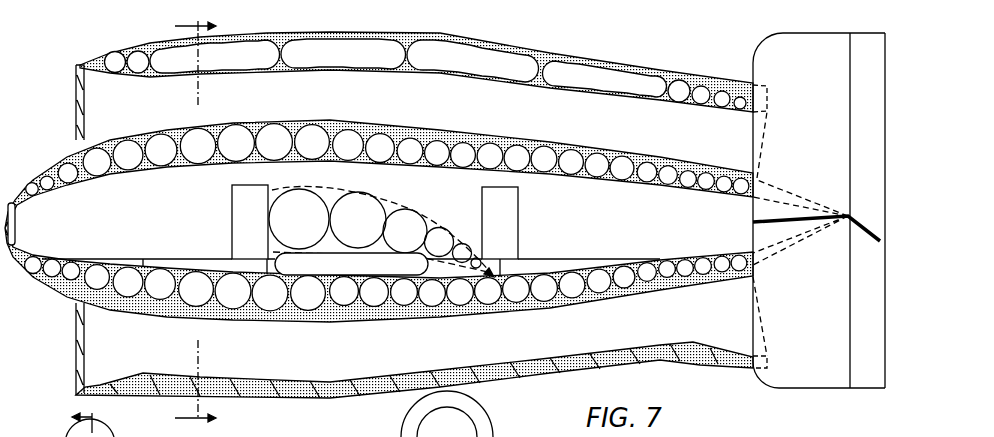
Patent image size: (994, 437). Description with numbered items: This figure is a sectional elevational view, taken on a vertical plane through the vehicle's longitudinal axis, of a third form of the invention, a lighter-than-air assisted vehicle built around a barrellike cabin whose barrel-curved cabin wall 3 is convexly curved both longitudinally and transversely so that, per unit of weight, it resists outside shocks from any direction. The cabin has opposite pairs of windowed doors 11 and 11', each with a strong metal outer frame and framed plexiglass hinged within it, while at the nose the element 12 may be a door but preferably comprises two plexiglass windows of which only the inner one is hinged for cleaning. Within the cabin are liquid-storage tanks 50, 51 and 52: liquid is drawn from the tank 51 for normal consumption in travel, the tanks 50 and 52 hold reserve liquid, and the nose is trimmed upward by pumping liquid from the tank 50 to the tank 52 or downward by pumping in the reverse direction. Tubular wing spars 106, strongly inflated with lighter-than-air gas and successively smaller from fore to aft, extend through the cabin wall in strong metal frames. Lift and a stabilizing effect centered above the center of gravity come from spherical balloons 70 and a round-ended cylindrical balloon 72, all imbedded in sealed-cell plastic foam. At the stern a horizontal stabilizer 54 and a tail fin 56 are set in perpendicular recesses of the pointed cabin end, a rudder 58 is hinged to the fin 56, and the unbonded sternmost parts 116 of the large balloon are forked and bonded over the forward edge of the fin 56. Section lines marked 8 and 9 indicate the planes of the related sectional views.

The barrel-curved cabin wall 3 is at (111, 173).
The section line 8- 8 is at (186, 226).
The section line 9- 9 is at (74, 420).
The windowed door 11 is at (250, 222).
The windowed door 11' is at (500, 223).
The window element 12 is at (17, 215).
The liquid-storage tank 50 is at (208, 265).
The liquid-storage tank 51 is at (363, 274).
The liquid-storage tank 52 is at (540, 267).
The horizontal stabilizer 54 is at (757, 221).
The tail fin 56 is at (816, 146).
The rudder 58 is at (882, 146).
The spherical balloon 70 is at (597, 168).
The round-ended cylindrical balloon 72 is at (353, 65).
The wing spar 106 is at (318, 230).
The unbonded sternmost parts 116 is at (760, 113).